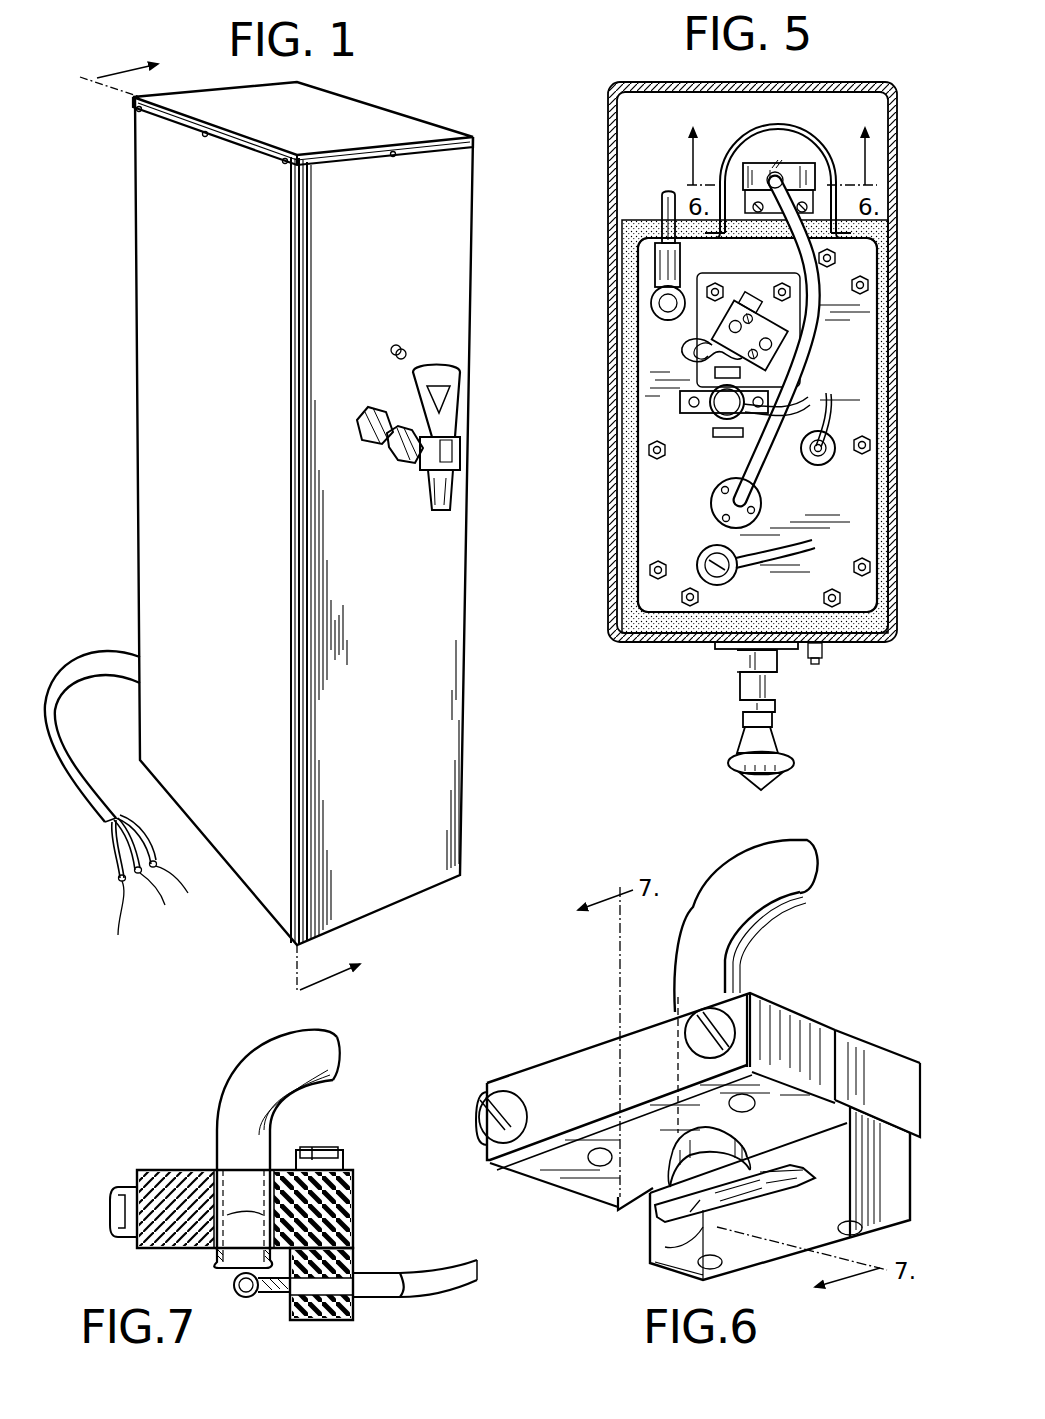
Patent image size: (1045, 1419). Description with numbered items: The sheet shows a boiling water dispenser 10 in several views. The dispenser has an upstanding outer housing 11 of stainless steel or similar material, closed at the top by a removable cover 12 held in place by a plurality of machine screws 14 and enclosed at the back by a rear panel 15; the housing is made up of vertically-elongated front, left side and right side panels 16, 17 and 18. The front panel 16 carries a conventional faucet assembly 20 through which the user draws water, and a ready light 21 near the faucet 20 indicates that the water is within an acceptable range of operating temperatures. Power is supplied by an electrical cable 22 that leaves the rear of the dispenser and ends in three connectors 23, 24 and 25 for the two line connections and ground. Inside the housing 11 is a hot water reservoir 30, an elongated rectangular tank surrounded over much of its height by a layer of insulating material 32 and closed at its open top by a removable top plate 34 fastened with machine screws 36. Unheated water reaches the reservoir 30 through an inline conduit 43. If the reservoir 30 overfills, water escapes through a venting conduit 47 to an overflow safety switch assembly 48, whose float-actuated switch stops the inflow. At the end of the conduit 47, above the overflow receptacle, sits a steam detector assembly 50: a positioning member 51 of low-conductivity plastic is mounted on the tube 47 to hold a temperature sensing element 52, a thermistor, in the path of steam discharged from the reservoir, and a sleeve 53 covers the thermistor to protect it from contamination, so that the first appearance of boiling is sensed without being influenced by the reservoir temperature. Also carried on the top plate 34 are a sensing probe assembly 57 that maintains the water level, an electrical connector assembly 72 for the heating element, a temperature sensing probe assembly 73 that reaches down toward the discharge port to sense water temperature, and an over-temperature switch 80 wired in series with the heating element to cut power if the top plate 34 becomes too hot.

In FIG. 1, the boiling water dispenser 10 is at (283, 523).
In FIG. 1, the outer housing 11 is at (188, 322).
In FIG. 5, the outer housing 11 is at (608, 437).
In FIG. 1, the removable cover 12 is at (340, 107).
In FIG. 1, the machine screws 14 is at (203, 135).
In FIG. 5, the rear panel 15 is at (780, 82).
In FIG. 1, the front panel 16 is at (433, 702).
In FIG. 5, the front panel 16 is at (647, 645).
In FIG. 1, the left side panel 17 is at (153, 502).
In FIG. 5, the left side panel 17 is at (612, 468).
In FIG. 5, the right side panel 18 is at (893, 442).
In FIG. 1, the faucet assembly 20 is at (397, 450).
In FIG. 5, the faucet assembly 20 is at (778, 727).
In FIG. 1, the ready light 21 is at (395, 346).
In FIG. 5, the ready light 21 is at (815, 664).
In FIG. 1, the electrical cable 22 is at (133, 768).
In FIG. 1, the connector 23 is at (122, 888).
In FIG. 1, the connector 24 is at (147, 877).
In FIG. 1, the connector 25 is at (169, 864).
In FIG. 5, the hot water reservoir 30 is at (636, 377).
In FIG. 5, the insulating material 32 is at (623, 290).
In FIG. 5, the top plate 34 is at (657, 507).
In FIG. 5, the machine screws 36 is at (680, 597).
In FIG. 5, the inline conduit 43 is at (665, 202).
In FIG. 5, the venting conduit 47 is at (757, 460).
In FIG. 7, the venting conduit 47 is at (248, 1090).
In FIG. 6, the venting conduit 47 is at (737, 883).
In FIG. 5, the overflow safety switch assembly 48 is at (815, 130).
In FIG. 5, the steam detector assembly 50 is at (723, 132).
In FIG. 7, the steam detector assembly 50 is at (280, 1182).
In FIG. 6, the steam detector assembly 50 is at (698, 1068).
In FIG. 5, the positioning member 51 is at (790, 157).
In FIG. 7, the positioning member 51 is at (190, 1170).
In FIG. 6, the positioning member 51 is at (803, 1040).
In FIG. 7, the temperature sensing element 52 is at (233, 1287).
In FIG. 6, the temperature sensing element 52 is at (705, 1228).
In FIG. 7, the sleeve 53 is at (282, 1297).
In FIG. 6, the sleeve 53 is at (757, 1172).
In FIG. 5, the sensing probe assembly 57 is at (717, 588).
In FIG. 5, the electrical connector assembly 72 is at (713, 320).
In FIG. 5, the temperature sensing probe assembly 73 is at (825, 460).
In FIG. 5, the over-temperature switch 80 is at (727, 403).